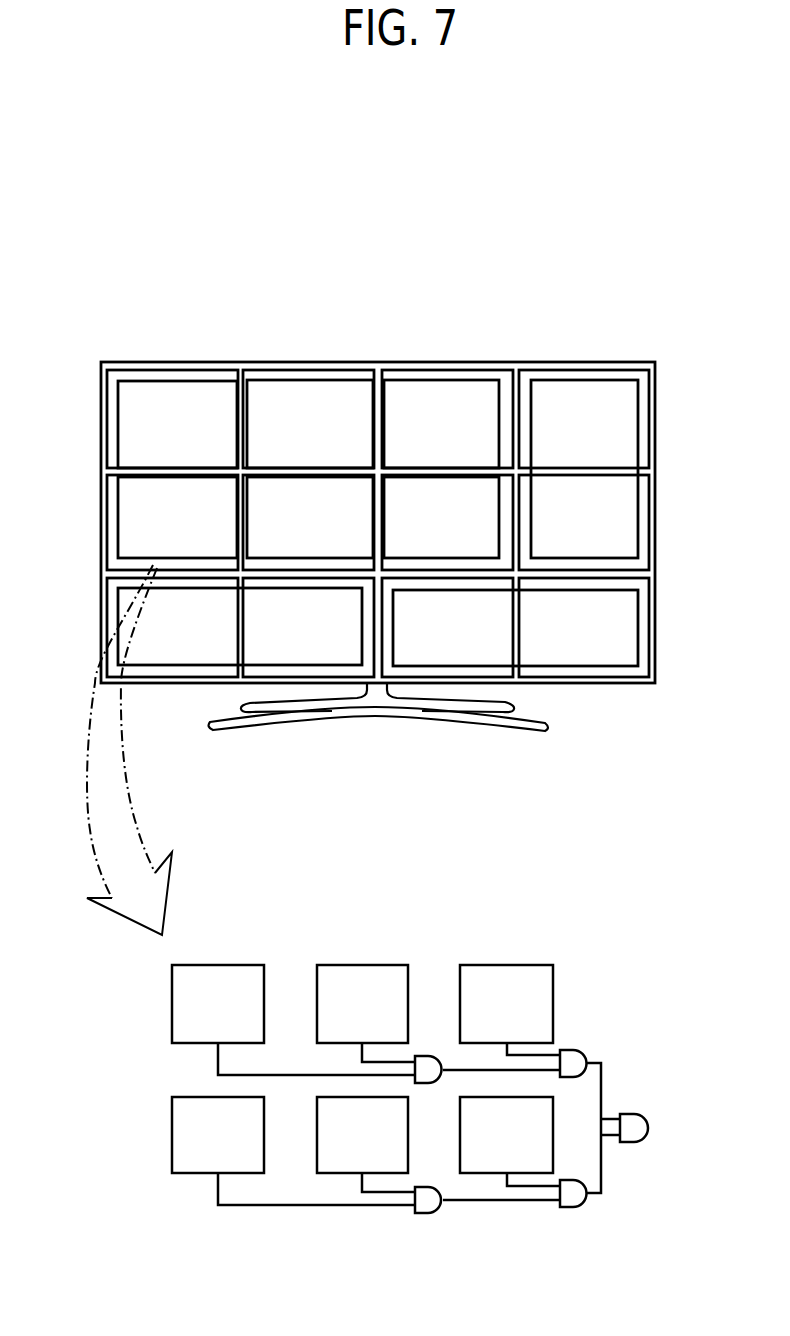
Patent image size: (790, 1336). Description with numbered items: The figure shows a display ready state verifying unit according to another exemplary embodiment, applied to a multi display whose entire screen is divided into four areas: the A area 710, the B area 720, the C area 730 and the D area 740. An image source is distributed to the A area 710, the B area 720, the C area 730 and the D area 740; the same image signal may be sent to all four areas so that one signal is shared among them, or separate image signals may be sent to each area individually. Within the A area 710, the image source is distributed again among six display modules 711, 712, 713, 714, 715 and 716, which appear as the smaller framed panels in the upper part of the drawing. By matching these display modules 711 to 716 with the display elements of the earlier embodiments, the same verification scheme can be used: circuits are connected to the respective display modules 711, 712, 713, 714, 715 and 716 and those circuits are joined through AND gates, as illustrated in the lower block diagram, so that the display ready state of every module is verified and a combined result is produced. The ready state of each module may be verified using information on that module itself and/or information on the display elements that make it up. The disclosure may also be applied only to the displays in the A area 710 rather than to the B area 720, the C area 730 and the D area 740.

The A area 710 is at (407, 380).
The display module 711 is at (177, 398).
The display module 712 is at (313, 398).
The display module 713 is at (477, 398).
The display module 714 is at (172, 537).
The display module 715 is at (342, 537).
The display module 716 is at (450, 540).
The B area 720 is at (580, 383).
The C area 730 is at (273, 665).
The D area 740 is at (585, 666).